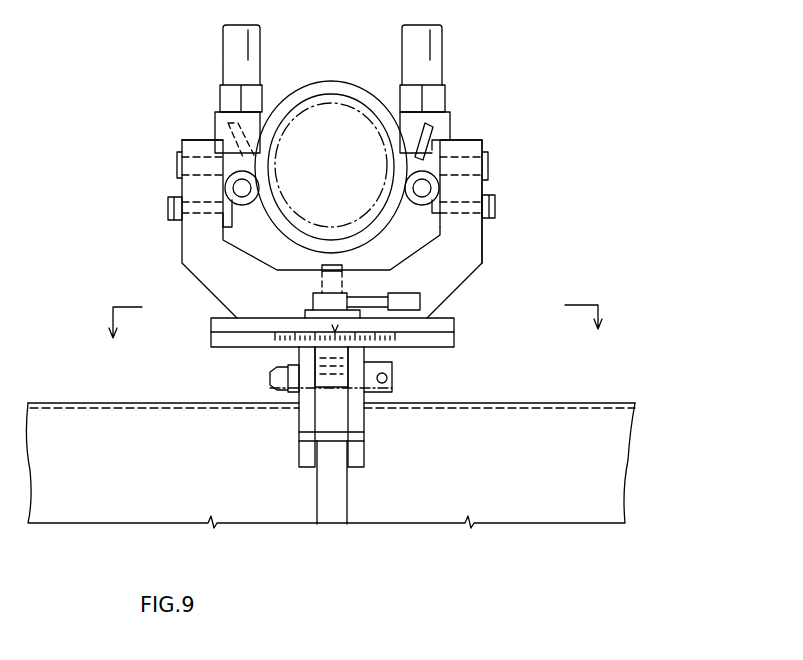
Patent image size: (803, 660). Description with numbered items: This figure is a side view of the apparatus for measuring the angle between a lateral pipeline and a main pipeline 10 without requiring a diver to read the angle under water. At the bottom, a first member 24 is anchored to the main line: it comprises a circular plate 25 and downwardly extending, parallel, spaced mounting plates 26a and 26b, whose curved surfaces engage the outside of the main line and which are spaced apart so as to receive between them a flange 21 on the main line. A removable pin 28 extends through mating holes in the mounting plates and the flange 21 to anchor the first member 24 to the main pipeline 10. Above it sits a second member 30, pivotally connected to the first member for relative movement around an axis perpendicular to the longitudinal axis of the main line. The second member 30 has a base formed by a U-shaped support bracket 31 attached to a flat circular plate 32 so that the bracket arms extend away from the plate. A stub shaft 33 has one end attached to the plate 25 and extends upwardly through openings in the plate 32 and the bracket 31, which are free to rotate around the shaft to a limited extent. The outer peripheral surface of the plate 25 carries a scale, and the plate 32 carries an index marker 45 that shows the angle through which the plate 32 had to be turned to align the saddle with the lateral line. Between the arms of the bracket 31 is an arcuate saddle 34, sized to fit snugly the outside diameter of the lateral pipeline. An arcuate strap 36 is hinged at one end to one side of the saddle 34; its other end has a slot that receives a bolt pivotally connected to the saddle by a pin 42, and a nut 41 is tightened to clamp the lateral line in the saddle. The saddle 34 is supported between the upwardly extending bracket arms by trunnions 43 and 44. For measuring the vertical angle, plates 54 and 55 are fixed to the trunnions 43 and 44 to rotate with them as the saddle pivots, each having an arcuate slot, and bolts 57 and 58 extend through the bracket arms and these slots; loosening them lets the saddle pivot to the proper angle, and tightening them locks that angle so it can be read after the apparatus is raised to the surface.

The main pipeline 10 is at (358, 334).
The flange 21 is at (334, 515).
The first member 24 is at (445, 370).
The circular plate 25 is at (455, 342).
The mounting plate 26a is at (299, 450).
The mounting plate 26b is at (365, 441).
The removable pin 28 is at (394, 385).
The second member 30 is at (506, 245).
The U-shaped support bracket 31 is at (197, 267).
The circular plate 32 is at (455, 322).
The stub shaft 33 is at (343, 267).
The saddle 34 is at (307, 245).
The arcuate strap 36 is at (331, 84).
The nut 41 is at (218, 95).
The pin 42 is at (251, 186).
The trunnion 43 is at (178, 165).
The trunnion 44 is at (490, 160).
The index marker 45 is at (326, 331).
The plate 54 is at (245, 224).
The plate 55 is at (437, 222).
The bolt 57 is at (168, 208).
The bolt 58 is at (497, 205).